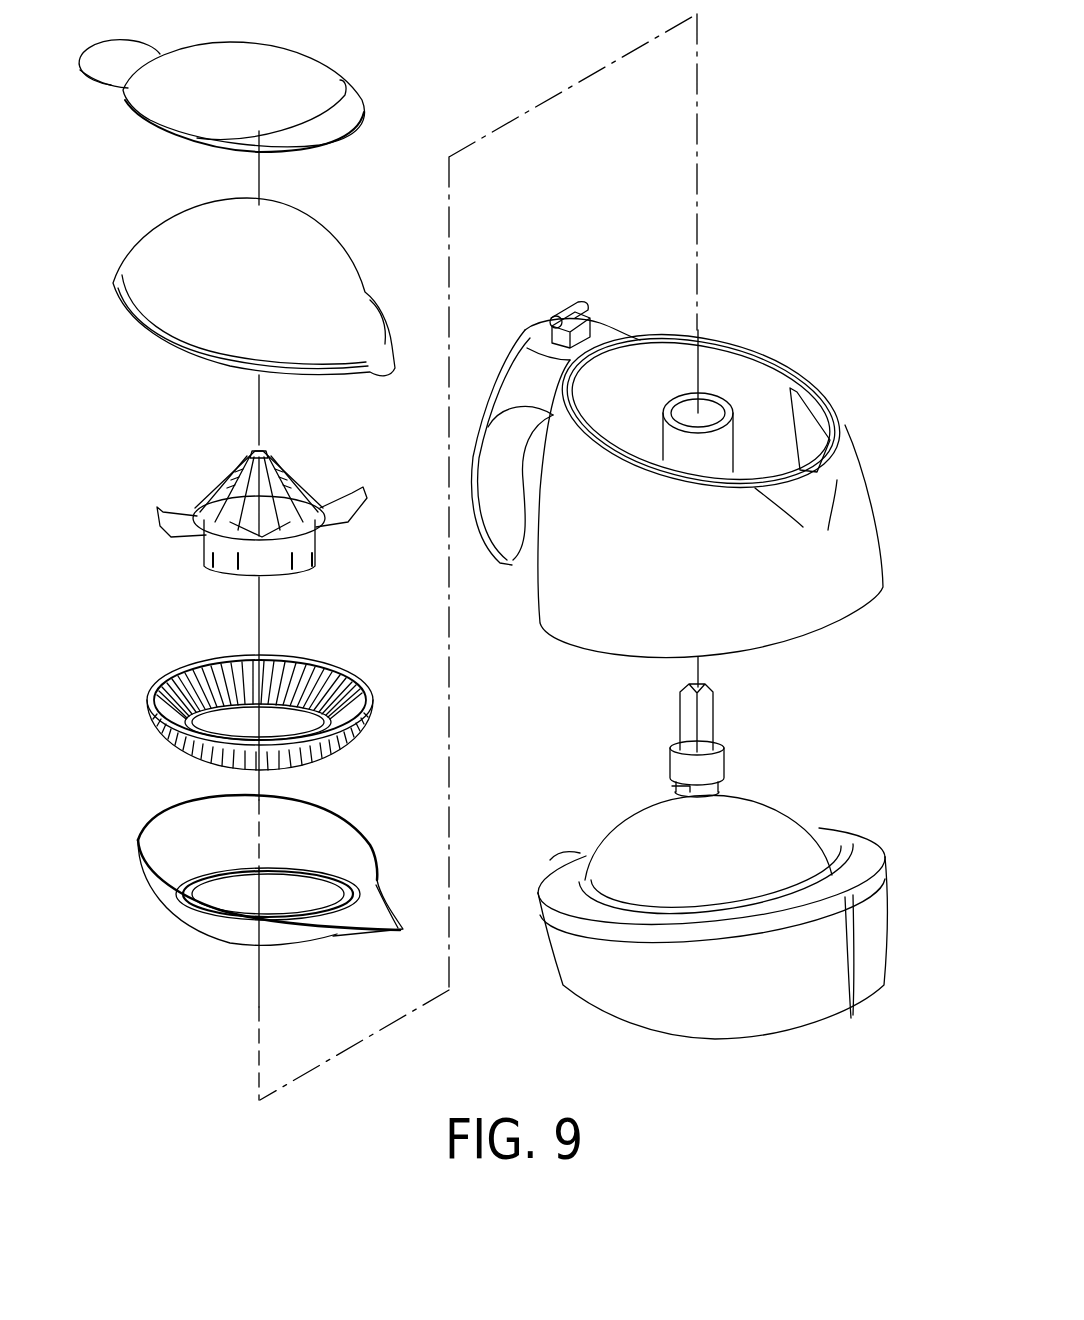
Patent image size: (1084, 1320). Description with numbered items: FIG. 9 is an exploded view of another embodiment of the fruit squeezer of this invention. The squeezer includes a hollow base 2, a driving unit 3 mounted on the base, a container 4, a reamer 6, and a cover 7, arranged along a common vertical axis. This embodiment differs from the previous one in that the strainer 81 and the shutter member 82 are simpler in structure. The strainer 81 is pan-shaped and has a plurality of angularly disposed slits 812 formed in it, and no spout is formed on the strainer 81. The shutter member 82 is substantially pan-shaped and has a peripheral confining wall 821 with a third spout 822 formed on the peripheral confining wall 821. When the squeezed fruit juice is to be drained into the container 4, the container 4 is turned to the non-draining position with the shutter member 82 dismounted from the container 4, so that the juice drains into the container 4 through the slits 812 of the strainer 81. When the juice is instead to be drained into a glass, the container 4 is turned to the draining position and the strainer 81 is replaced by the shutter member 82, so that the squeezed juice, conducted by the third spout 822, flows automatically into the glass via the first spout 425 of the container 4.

The hollow base 2 is at (743, 1020).
The driving unit 3 is at (857, 843).
The container 4 is at (793, 613).
The first spout 425 is at (835, 472).
The reamer 6 is at (318, 549).
The cover 7 is at (308, 252).
The strainer 81 is at (317, 660).
The slits 812 is at (188, 687).
The shutter member 82 is at (365, 845).
The peripheral confining wall 821 is at (180, 857).
The third spout 822 is at (388, 922).